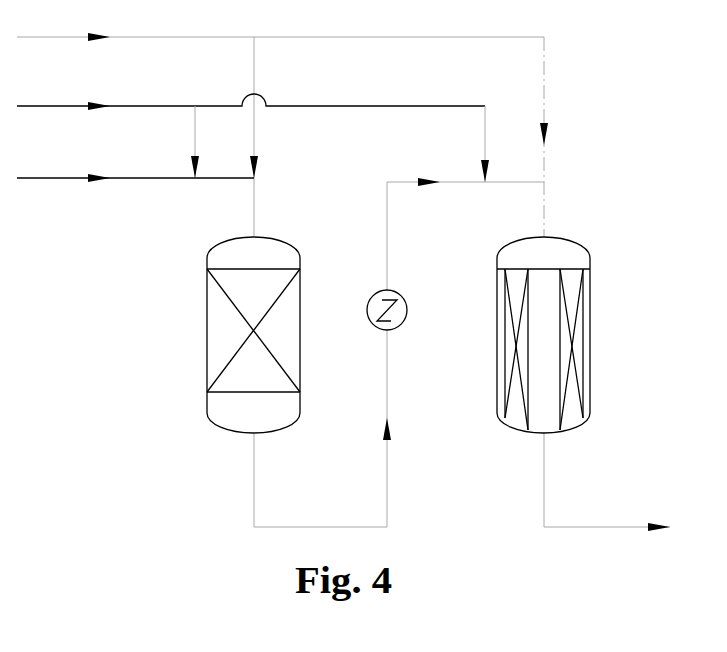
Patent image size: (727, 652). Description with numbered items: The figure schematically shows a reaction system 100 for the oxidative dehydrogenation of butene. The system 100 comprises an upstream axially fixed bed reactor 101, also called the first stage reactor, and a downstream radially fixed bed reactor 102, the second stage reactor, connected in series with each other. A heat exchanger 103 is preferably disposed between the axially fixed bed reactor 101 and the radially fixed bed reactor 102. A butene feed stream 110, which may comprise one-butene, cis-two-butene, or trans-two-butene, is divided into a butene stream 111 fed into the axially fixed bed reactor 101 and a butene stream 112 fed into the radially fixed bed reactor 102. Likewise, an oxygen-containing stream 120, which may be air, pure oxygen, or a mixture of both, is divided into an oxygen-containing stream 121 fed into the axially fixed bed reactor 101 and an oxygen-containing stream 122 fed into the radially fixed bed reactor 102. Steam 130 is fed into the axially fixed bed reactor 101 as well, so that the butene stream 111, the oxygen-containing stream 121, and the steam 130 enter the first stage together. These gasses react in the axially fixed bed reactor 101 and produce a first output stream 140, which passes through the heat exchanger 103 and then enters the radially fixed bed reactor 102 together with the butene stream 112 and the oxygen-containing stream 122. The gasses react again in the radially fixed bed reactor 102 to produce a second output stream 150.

The reaction system 100 is at (126, 270).
The axially fixed bed reactor 101 is at (300, 390).
The radially fixed bed reactor 102 is at (592, 393).
The heat exchanger 103 is at (401, 292).
The butene feed stream 110 is at (280, 28).
The butene stream 111 is at (277, 137).
The butene stream 112 is at (567, 137).
The oxygen-containing stream 120 is at (251, 96).
The oxygen-containing stream 121 is at (214, 142).
The oxygen-containing stream 122 is at (505, 144).
The steam 130 is at (135, 168).
The first output stream 140 is at (399, 352).
The second output stream 150 is at (607, 482).